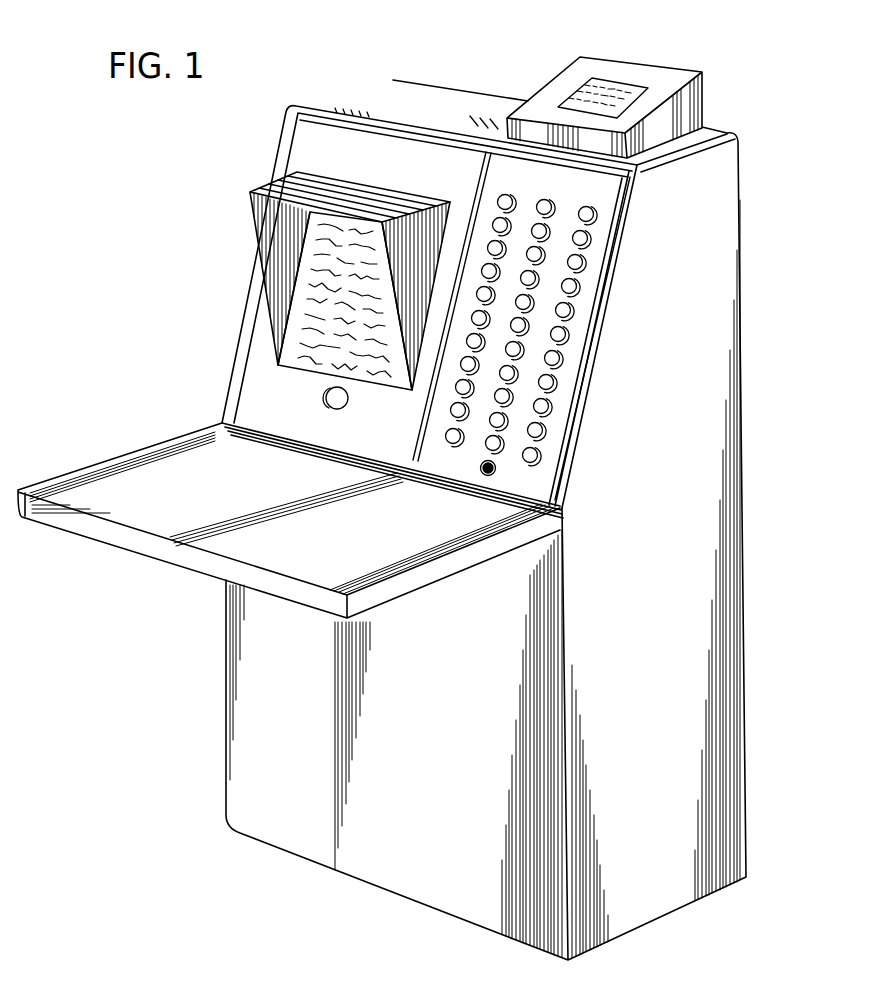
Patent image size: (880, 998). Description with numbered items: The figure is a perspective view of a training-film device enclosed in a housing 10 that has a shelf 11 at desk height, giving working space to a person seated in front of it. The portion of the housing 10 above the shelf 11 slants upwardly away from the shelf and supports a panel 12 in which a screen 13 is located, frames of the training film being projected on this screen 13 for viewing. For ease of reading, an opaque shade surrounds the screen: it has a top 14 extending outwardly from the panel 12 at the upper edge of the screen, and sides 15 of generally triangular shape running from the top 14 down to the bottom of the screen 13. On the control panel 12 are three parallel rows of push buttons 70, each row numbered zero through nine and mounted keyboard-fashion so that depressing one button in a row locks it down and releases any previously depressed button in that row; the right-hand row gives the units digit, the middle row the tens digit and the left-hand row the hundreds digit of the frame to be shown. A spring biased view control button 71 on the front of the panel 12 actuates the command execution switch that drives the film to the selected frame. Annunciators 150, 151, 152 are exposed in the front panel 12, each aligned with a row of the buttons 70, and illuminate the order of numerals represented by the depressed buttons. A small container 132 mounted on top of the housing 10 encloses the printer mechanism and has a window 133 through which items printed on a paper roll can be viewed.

The housing 10 is at (747, 565).
The shelf 11 is at (462, 567).
The panel 12 is at (305, 143).
The screen 13 is at (310, 328).
The top 14 is at (272, 183).
The sides 15 is at (412, 217).
The push buttons 70 is at (554, 199).
The view control button 71 is at (486, 476).
The container 132 is at (693, 107).
The window 133 is at (627, 90).
The annunciator 150 is at (445, 437).
The annunciator 151 is at (487, 447).
The annunciator 152 is at (539, 453).